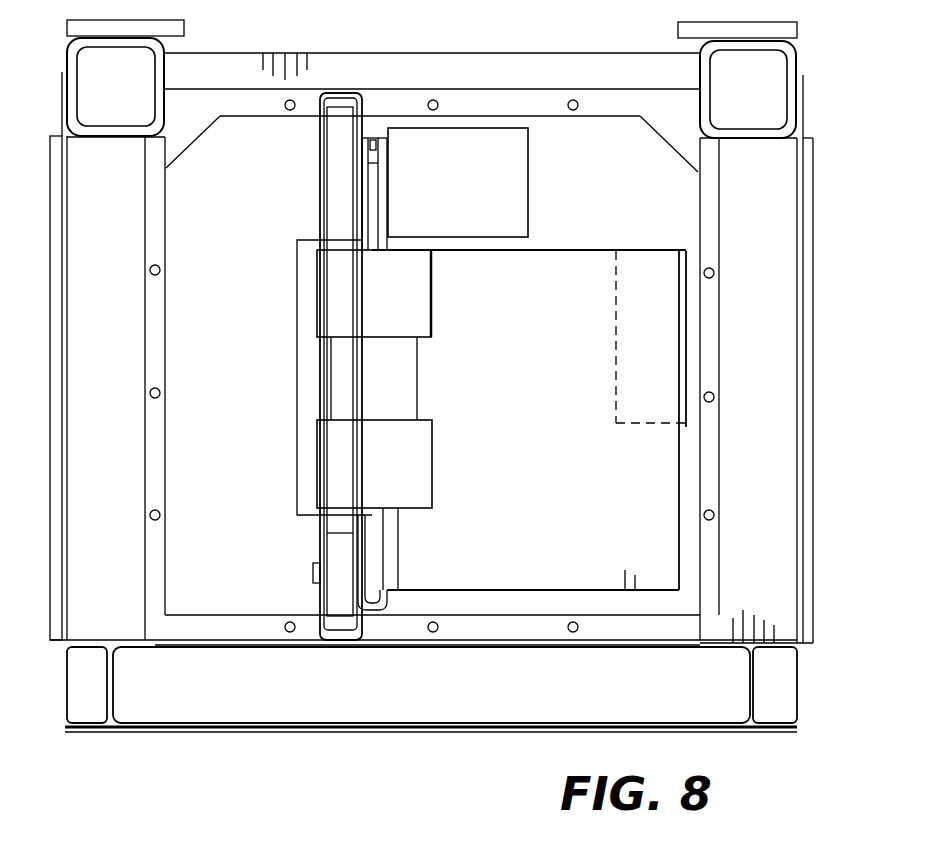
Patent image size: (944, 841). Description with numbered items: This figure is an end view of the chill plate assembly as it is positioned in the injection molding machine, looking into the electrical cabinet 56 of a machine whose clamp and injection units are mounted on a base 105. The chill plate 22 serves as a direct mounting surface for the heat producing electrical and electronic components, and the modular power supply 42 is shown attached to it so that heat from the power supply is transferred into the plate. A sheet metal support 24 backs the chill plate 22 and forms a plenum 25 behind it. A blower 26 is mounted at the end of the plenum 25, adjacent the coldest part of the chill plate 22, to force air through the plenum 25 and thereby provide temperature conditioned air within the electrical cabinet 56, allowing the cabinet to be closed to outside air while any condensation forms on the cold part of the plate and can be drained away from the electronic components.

The base 105 is at (797, 62).
The electrical cabinet 56 is at (200, 433).
The sheet metal support 24 is at (323, 180).
The plenum 25 is at (345, 125).
The chill plate 22 is at (373, 544).
The blower 26 is at (335, 307).
The power supply 42 is at (522, 406).